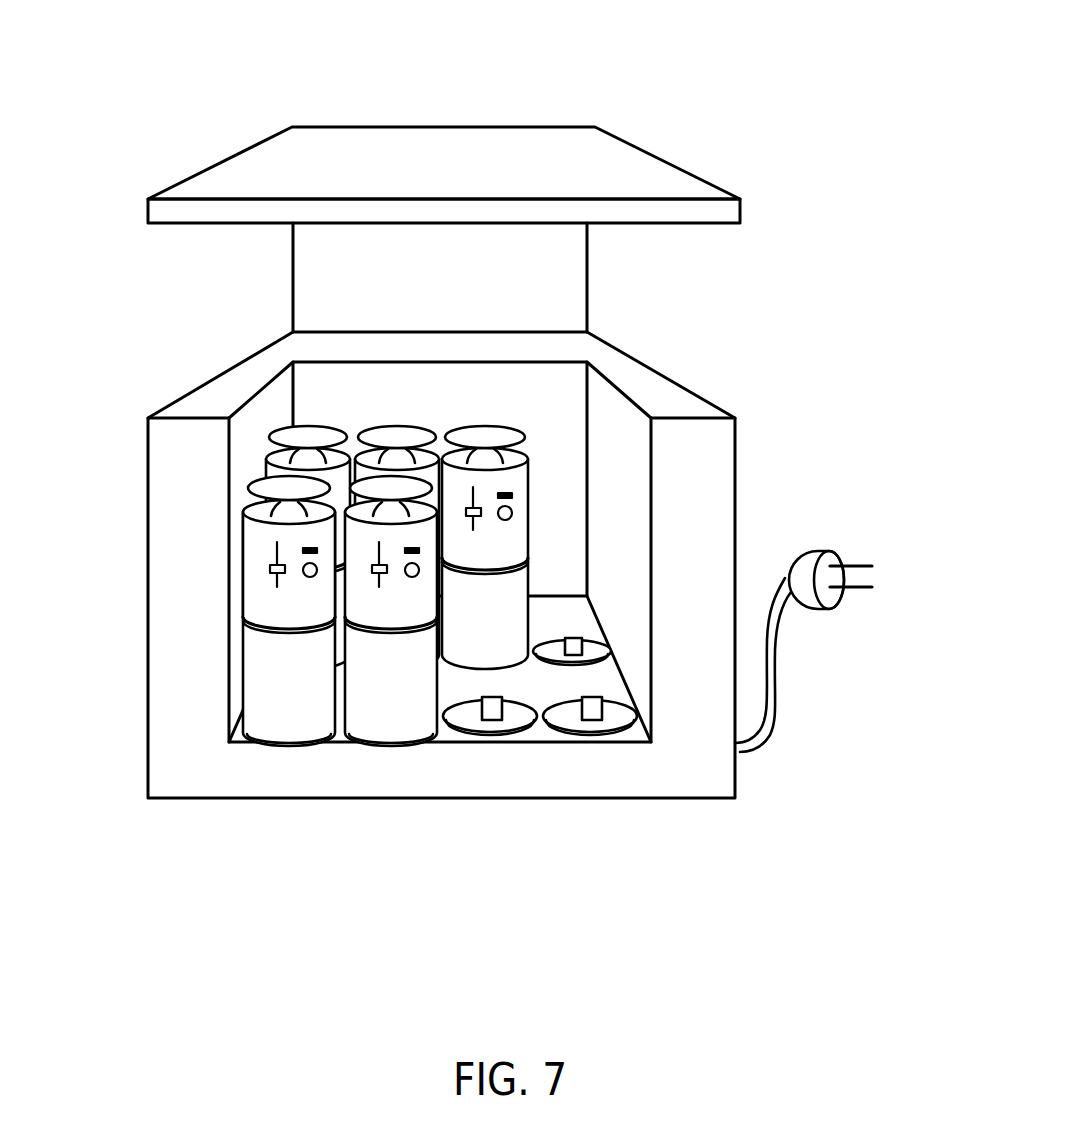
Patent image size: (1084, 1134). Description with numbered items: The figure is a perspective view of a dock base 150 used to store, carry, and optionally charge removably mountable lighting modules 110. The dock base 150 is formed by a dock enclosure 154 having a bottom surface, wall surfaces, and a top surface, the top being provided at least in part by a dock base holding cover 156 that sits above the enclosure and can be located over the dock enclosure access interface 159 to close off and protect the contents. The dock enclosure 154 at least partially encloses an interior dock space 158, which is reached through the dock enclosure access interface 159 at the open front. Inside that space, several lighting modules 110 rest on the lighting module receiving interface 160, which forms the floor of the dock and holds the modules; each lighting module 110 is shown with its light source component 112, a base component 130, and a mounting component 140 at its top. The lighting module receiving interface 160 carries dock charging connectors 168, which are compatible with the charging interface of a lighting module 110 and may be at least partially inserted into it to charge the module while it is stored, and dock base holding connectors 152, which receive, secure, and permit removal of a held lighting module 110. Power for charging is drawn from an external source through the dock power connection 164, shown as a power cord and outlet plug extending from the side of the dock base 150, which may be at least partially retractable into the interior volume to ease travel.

The dock base 150 is at (282, 28).
The dock base holding cover 156 is at (610, 147).
The dock enclosure 154 is at (702, 447).
The dock enclosure access interface 159 is at (306, 370).
The interior dock space 158 is at (550, 408).
The lighting module receiving interface 160 is at (608, 680).
The dock power connection 164 is at (830, 552).
The lighting module 110 is at (212, 689).
The light source component 112 is at (372, 702).
The base component 130 is at (258, 550).
The mounting component 140 is at (258, 495).
The dock charging connector 168 is at (485, 703).
The dock base holding connector 152 is at (615, 725).